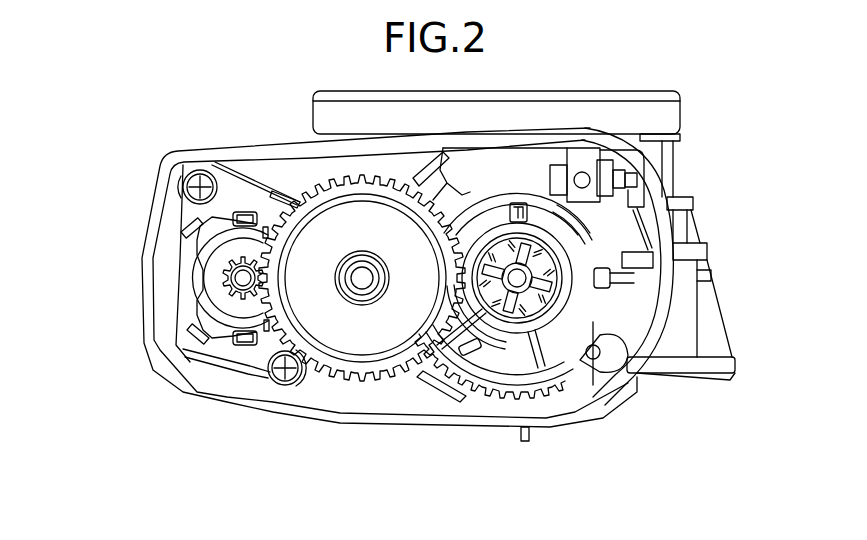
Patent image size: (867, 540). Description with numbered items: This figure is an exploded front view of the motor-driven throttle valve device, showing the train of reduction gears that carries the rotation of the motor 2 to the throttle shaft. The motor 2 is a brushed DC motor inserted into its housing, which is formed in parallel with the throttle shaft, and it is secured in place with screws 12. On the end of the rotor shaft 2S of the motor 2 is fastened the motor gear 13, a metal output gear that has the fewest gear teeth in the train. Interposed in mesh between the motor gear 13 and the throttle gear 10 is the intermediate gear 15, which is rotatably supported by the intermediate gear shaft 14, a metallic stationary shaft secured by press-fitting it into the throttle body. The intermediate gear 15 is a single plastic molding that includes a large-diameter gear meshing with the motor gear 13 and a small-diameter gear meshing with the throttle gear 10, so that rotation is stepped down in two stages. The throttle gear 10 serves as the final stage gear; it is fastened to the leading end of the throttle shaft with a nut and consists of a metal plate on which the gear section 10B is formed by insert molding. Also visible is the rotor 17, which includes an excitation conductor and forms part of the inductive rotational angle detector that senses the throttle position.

The motor 2 is at (192, 285).
The rotor shaft 2S is at (240, 273).
The throttle gear 10 is at (510, 352).
The gear section 10B is at (485, 389).
The screws 12 is at (183, 193).
The motor gear 13 is at (200, 335).
The intermediate gear shaft 14 is at (363, 284).
The intermediate gear 15 is at (347, 226).
The rotor 17 is at (535, 286).